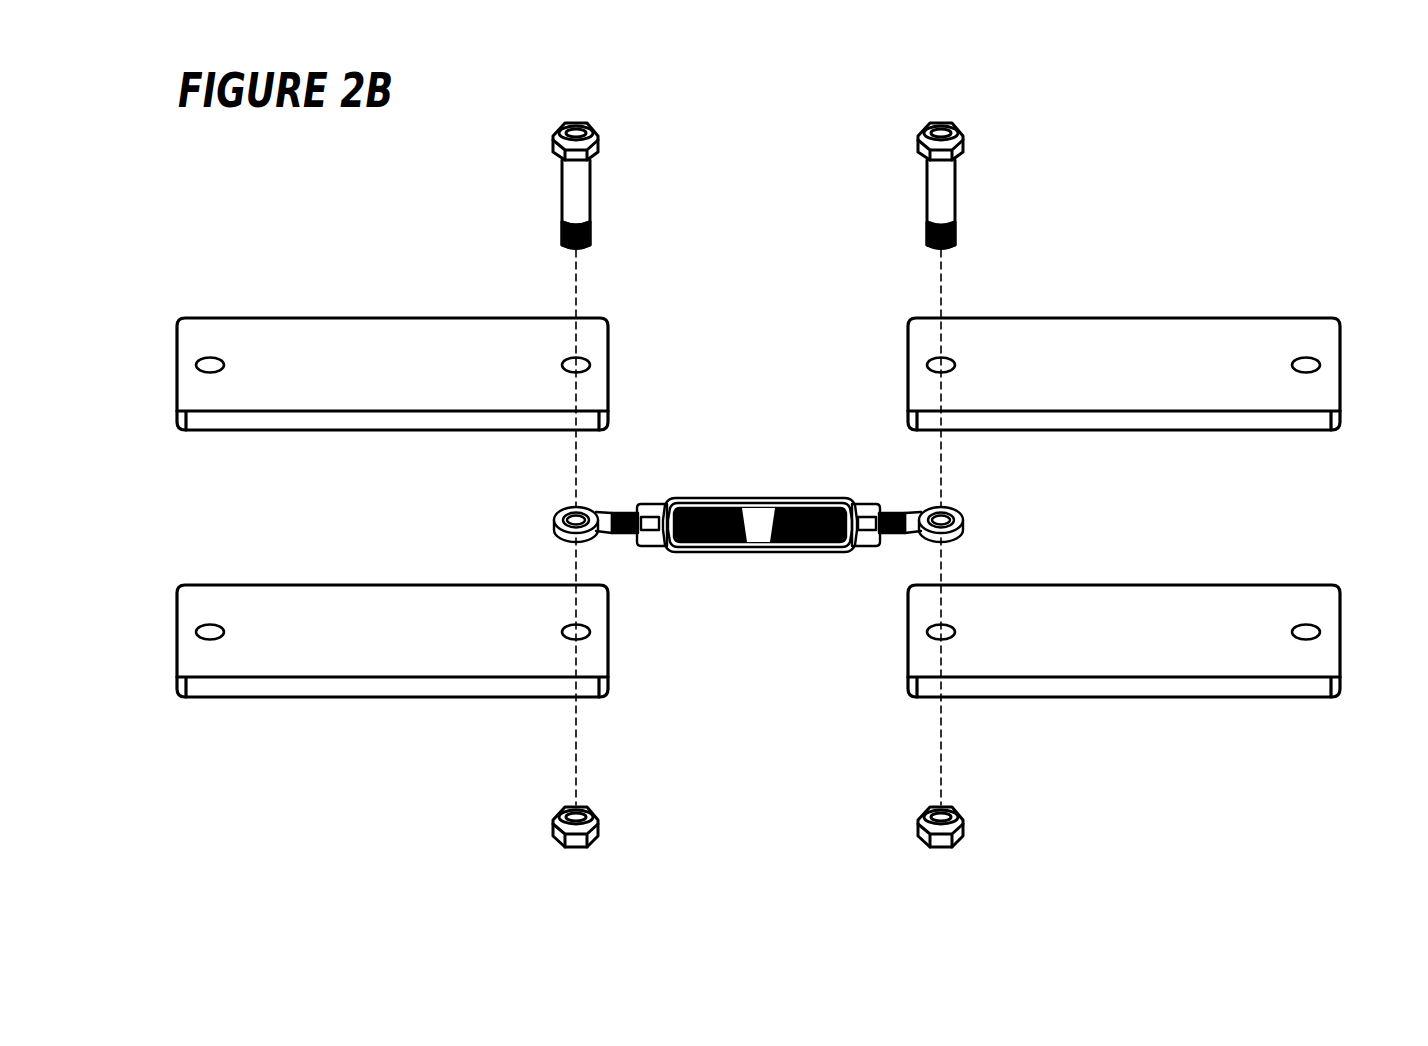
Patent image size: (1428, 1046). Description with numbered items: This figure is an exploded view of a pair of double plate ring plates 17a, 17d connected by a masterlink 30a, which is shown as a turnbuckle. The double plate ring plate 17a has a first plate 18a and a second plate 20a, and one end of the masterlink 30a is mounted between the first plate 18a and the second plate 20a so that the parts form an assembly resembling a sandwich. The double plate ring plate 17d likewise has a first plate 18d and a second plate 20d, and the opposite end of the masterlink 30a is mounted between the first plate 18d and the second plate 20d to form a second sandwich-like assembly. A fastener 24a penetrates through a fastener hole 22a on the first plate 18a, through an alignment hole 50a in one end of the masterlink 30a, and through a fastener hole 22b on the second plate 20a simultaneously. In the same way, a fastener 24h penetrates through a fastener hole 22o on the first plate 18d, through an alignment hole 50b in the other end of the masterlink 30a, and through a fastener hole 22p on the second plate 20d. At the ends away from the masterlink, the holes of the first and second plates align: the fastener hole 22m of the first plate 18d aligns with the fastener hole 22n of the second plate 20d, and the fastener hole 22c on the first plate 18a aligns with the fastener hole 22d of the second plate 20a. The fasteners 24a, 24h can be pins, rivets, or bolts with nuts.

The double plate ring plate 17a is at (255, 252).
The double plate ring plate 17d is at (1265, 252).
The first plate 18a is at (393, 332).
The first plate 18d is at (1127, 332).
The second plate 20a is at (393, 600).
The second plate 20d is at (1127, 600).
The fastener hole 22a is at (587, 358).
The fastener hole 22b is at (587, 626).
The fastener hole 22c is at (200, 358).
The fastener hole 22d is at (200, 626).
The fastener hole 22m is at (1317, 358).
The fastener hole 22n is at (1317, 626).
The fastener hole 22o is at (931, 358).
The fastener hole 22p is at (931, 626).
The fastener 24a is at (576, 128).
The fastener 24h is at (941, 128).
The masterlink 30a is at (760, 500).
The alignment hole 50a is at (571, 513).
The alignment hole 50b is at (947, 513).